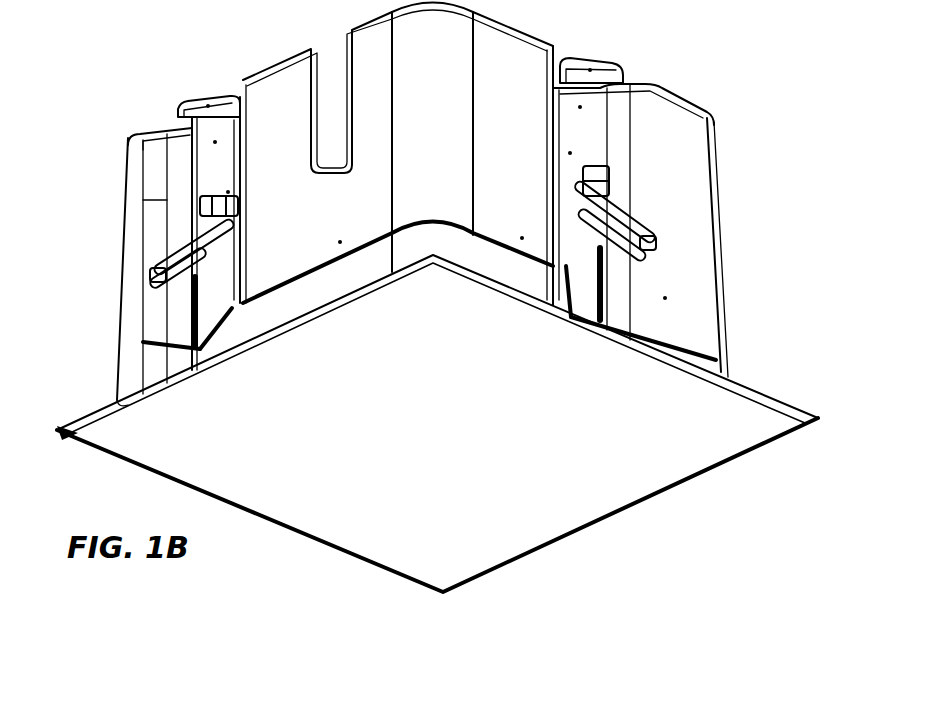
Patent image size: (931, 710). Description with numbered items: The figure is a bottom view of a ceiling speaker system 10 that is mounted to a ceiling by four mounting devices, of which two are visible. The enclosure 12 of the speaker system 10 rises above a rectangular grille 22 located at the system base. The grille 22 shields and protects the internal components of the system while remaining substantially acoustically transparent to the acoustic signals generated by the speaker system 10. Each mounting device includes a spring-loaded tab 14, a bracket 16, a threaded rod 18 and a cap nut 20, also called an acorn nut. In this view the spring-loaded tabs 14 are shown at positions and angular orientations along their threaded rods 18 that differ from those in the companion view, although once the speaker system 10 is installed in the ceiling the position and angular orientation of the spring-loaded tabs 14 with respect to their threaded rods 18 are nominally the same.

The ceiling speaker system 10 is at (740, 61).
The enclosure 12 is at (722, 207).
The spring-loaded tab 14 is at (246, 224).
The bracket 16 is at (232, 147).
The threaded rod 18 is at (200, 287).
The cap nut 20 is at (200, 193).
The grille 22 is at (764, 420).